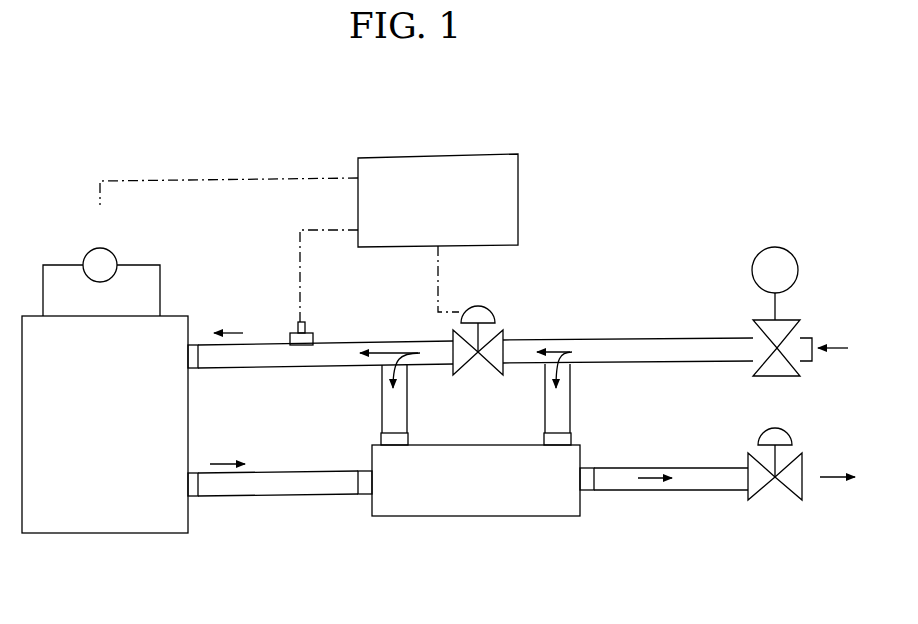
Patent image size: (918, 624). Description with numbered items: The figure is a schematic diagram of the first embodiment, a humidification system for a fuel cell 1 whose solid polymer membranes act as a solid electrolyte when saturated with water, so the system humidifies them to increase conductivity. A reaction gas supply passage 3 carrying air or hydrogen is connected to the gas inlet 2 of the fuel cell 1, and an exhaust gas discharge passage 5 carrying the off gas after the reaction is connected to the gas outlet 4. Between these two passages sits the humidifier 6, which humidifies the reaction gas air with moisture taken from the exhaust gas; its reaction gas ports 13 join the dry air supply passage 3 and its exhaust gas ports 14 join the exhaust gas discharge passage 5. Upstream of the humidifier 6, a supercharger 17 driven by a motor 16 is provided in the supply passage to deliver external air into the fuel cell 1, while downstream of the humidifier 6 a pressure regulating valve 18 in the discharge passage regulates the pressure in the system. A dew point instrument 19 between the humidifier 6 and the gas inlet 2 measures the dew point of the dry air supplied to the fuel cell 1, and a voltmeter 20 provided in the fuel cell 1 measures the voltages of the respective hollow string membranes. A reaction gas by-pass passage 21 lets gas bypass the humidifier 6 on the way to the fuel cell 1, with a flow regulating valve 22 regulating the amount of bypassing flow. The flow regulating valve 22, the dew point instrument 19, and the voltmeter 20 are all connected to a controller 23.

The fuel cell 1 is at (113, 524).
The gas inlet 2 is at (193, 344).
The reaction gas supply passage 3 is at (392, 409).
The gas outlet 4 is at (192, 500).
The exhaust gas discharge passage 5 is at (316, 496).
The humidifier 6 is at (470, 516).
The reaction gas ports 13 is at (408, 437).
The exhaust gas ports 14 is at (362, 500).
The motor 16 is at (772, 247).
The supercharger 17 is at (795, 321).
The pressure regulating valve 18 is at (783, 492).
The dew point instrument 19 is at (314, 333).
The voltmeter 20 is at (92, 250).
The reaction gas by-pass passage 21 is at (522, 344).
The flow regulating valve 22 is at (470, 308).
The controller 23 is at (452, 156).